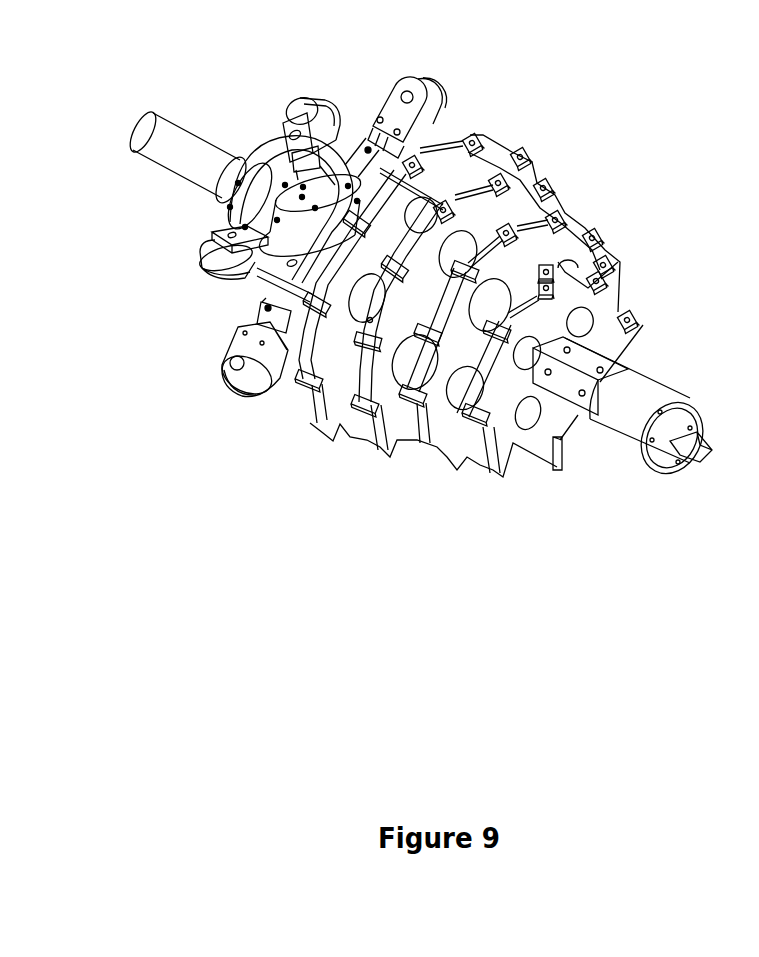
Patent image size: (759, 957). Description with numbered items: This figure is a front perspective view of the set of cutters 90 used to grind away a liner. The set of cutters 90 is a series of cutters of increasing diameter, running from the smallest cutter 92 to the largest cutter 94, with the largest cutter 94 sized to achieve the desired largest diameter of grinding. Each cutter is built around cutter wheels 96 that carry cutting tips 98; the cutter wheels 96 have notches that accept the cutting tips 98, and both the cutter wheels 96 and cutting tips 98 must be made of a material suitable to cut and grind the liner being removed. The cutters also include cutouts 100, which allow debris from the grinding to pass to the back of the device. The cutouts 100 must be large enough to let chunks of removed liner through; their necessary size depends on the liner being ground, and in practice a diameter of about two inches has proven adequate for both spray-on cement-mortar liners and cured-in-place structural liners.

The set of cutters 90 is at (525, 515).
The smallest cutter 92 is at (556, 451).
The largest cutter 94 is at (312, 386).
The cutter wheel 96 is at (540, 172).
The cutting tip 98 is at (565, 177).
The cutout 100 is at (507, 373).